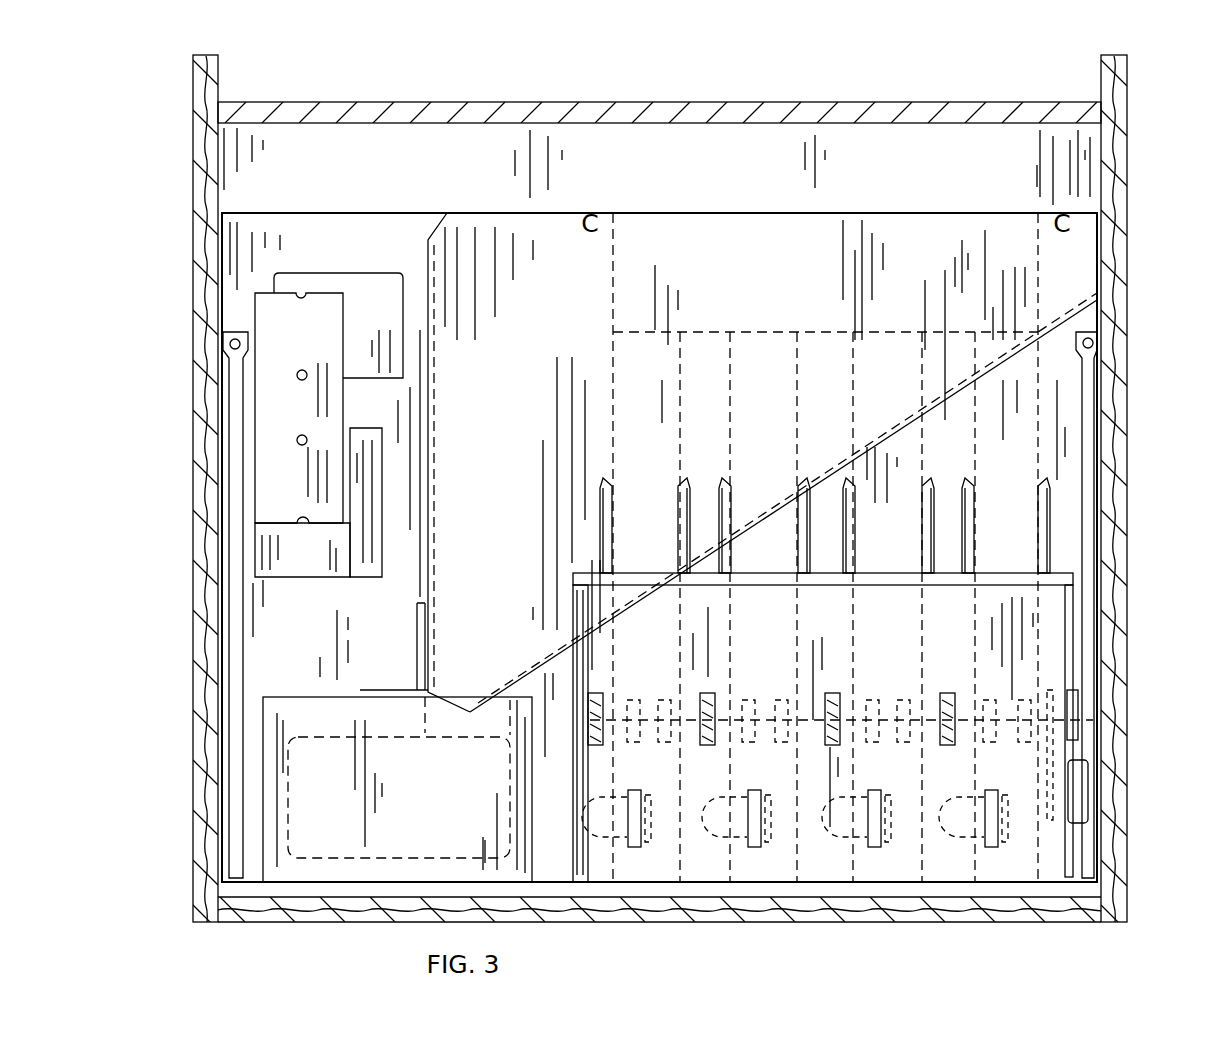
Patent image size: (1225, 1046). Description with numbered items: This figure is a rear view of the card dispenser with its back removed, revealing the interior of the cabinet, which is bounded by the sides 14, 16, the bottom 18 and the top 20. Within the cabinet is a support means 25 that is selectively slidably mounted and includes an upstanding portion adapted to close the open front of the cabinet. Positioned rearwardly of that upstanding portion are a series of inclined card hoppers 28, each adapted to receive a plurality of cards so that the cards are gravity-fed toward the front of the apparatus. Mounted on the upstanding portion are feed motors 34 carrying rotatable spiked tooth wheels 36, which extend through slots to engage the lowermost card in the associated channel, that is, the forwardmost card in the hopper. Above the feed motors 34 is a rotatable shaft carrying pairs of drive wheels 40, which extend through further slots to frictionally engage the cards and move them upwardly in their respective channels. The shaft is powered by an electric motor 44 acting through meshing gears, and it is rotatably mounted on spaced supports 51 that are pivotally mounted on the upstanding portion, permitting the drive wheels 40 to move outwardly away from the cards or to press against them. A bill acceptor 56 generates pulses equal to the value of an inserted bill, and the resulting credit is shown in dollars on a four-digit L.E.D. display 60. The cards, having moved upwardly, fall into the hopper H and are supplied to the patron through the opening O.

The side 14 is at (193, 320).
The side 16 is at (1127, 218).
The bottom 18 is at (365, 907).
The top 20 is at (583, 100).
The support means 25 is at (1103, 790).
The inclined card hopper 28 is at (651, 530).
The feed motor 34 is at (965, 838).
The spiked tooth wheel 36 is at (1006, 848).
The drive wheel 40 is at (1022, 742).
The electric motor 44 is at (1090, 812).
The spaced support 51 is at (945, 695).
The bill acceptor 56 is at (290, 551).
The four-digit L.E.D. display 60 is at (368, 292).
The hopper H is at (765, 265).
The opening O is at (410, 762).